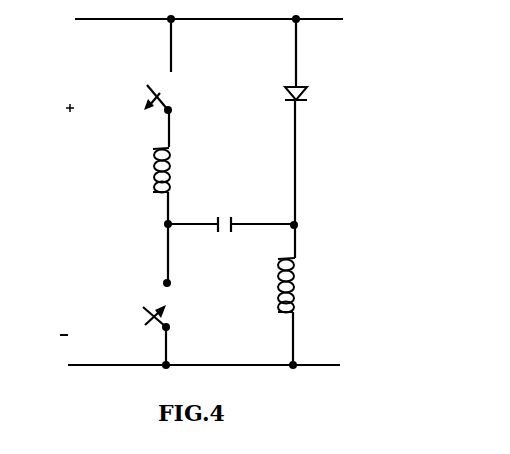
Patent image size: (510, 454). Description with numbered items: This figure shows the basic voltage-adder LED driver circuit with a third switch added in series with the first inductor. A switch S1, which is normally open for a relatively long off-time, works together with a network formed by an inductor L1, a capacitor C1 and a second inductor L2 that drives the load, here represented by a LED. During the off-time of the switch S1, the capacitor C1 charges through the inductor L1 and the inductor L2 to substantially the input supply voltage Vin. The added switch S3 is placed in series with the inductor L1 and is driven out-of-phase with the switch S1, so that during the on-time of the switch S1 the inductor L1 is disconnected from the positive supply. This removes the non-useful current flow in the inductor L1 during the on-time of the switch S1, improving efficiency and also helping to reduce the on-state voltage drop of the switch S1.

The third switch S3 is at (142, 100).
The inductor L1 is at (147, 170).
The capacitor C1 is at (231, 208).
The element LED is at (322, 102).
The inductor L2 is at (302, 286).
The switch S1 is at (140, 305).
The input supply voltage Vin is at (60, 201).